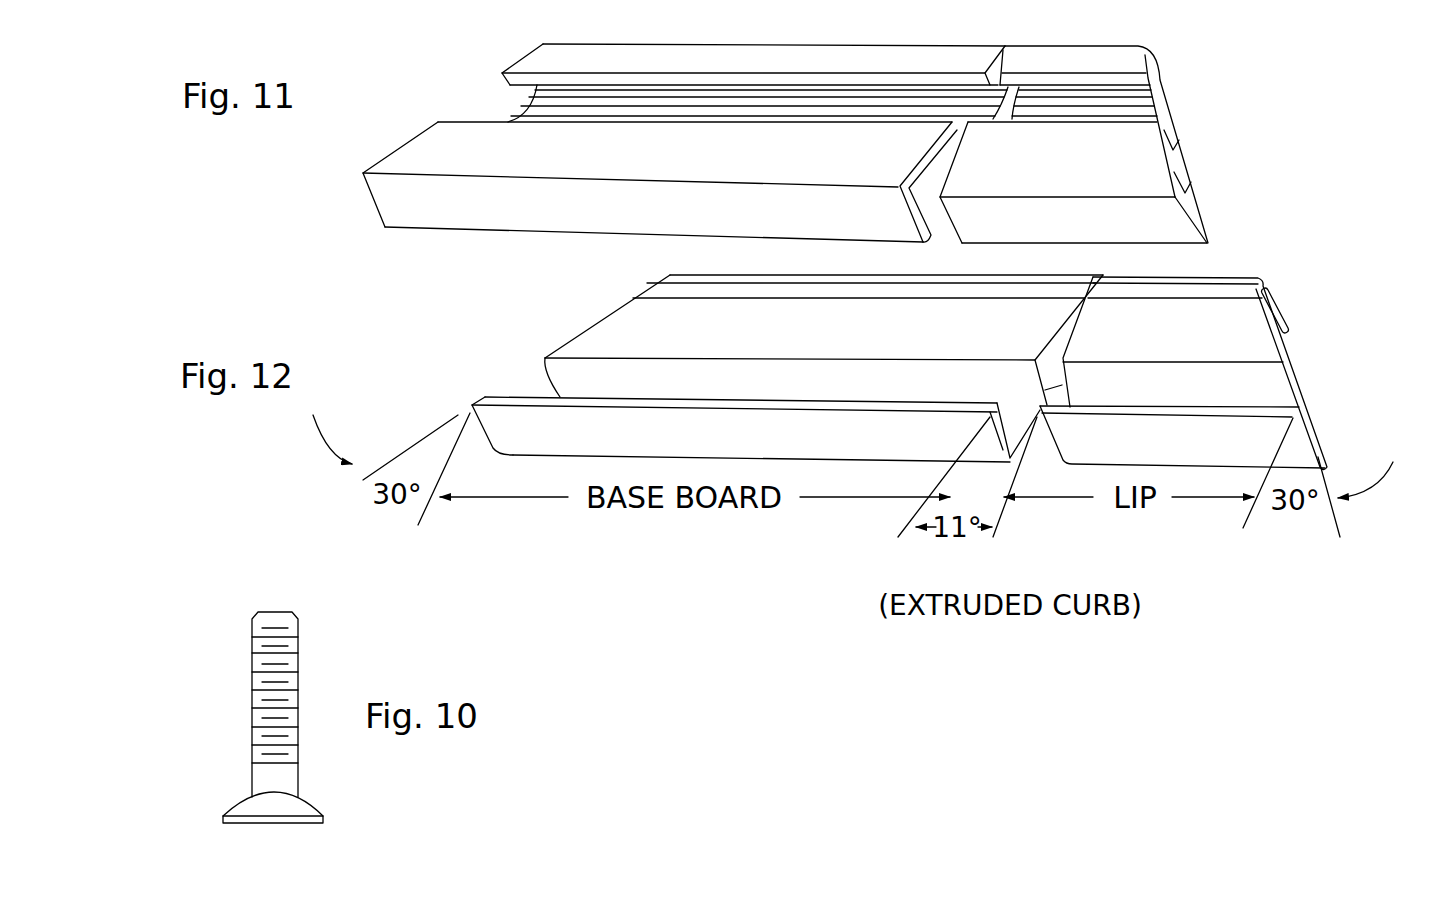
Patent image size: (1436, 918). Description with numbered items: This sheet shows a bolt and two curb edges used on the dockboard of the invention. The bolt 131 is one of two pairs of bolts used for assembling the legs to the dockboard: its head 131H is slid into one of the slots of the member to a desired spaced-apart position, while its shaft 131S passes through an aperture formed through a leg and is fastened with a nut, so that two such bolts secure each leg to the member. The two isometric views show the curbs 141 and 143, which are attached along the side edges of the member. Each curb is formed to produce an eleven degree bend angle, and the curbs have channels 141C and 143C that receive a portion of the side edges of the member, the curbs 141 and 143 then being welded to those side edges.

In FIG. 10, the bolt 131 is at (239, 686).
In FIG. 10, the shaft 131S is at (310, 642).
In FIG. 10, the head 131H is at (242, 803).
In FIG. 12, the curb 141 is at (1289, 332).
In FIG. 12, the channel 141C is at (1247, 398).
In FIG. 11, the curb 143 is at (1177, 102).
In FIG. 11, the channel 143C is at (1193, 207).